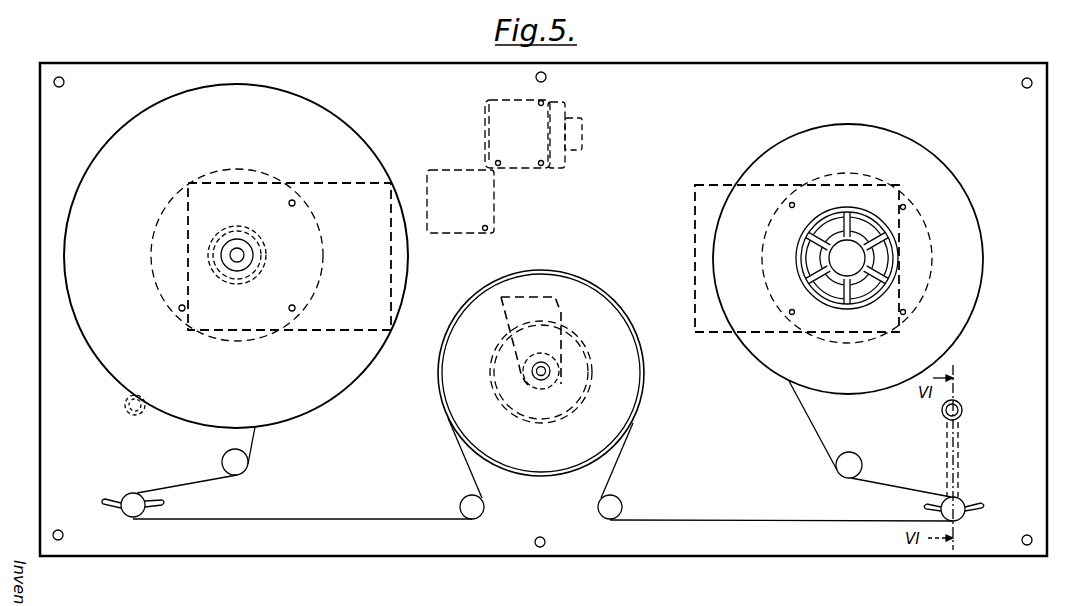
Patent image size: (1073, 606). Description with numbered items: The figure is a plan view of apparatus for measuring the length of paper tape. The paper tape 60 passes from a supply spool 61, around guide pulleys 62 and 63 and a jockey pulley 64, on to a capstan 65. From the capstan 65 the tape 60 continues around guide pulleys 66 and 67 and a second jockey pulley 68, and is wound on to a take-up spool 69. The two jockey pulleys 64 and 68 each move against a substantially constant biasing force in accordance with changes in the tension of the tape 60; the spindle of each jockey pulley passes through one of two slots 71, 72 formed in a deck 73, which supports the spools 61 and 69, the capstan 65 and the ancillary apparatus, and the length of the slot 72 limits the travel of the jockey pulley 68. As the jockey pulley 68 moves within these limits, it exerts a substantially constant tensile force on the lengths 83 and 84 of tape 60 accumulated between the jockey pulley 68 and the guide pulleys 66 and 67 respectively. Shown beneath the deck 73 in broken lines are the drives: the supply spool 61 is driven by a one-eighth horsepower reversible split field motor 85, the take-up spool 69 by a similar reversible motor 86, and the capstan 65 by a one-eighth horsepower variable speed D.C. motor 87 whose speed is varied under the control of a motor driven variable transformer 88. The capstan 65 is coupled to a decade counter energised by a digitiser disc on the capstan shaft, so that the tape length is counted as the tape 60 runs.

The paper tape 60 is at (329, 518).
The supply spool 61 is at (320, 118).
The guide pulley 62 is at (222, 461).
The guide pulley 63 is at (460, 500).
The jockey pulley 64 is at (134, 492).
The capstan 65 is at (612, 312).
The guide pulley 66 is at (622, 507).
The guide pulley 67 is at (856, 469).
The jockey pulley 68 is at (958, 504).
The take-up spool 69 is at (928, 166).
The slot 71 is at (164, 500).
The slot 72 is at (973, 513).
The deck 73 is at (566, 134).
The length of tape 83 is at (838, 520).
The length of tape 84 is at (903, 488).
The reversible split field motor 85 is at (168, 248).
The reversible motor 86 is at (932, 279).
The variable speed D.C. motor 87 is at (555, 413).
The motor driven variable transformer 88 is at (502, 148).